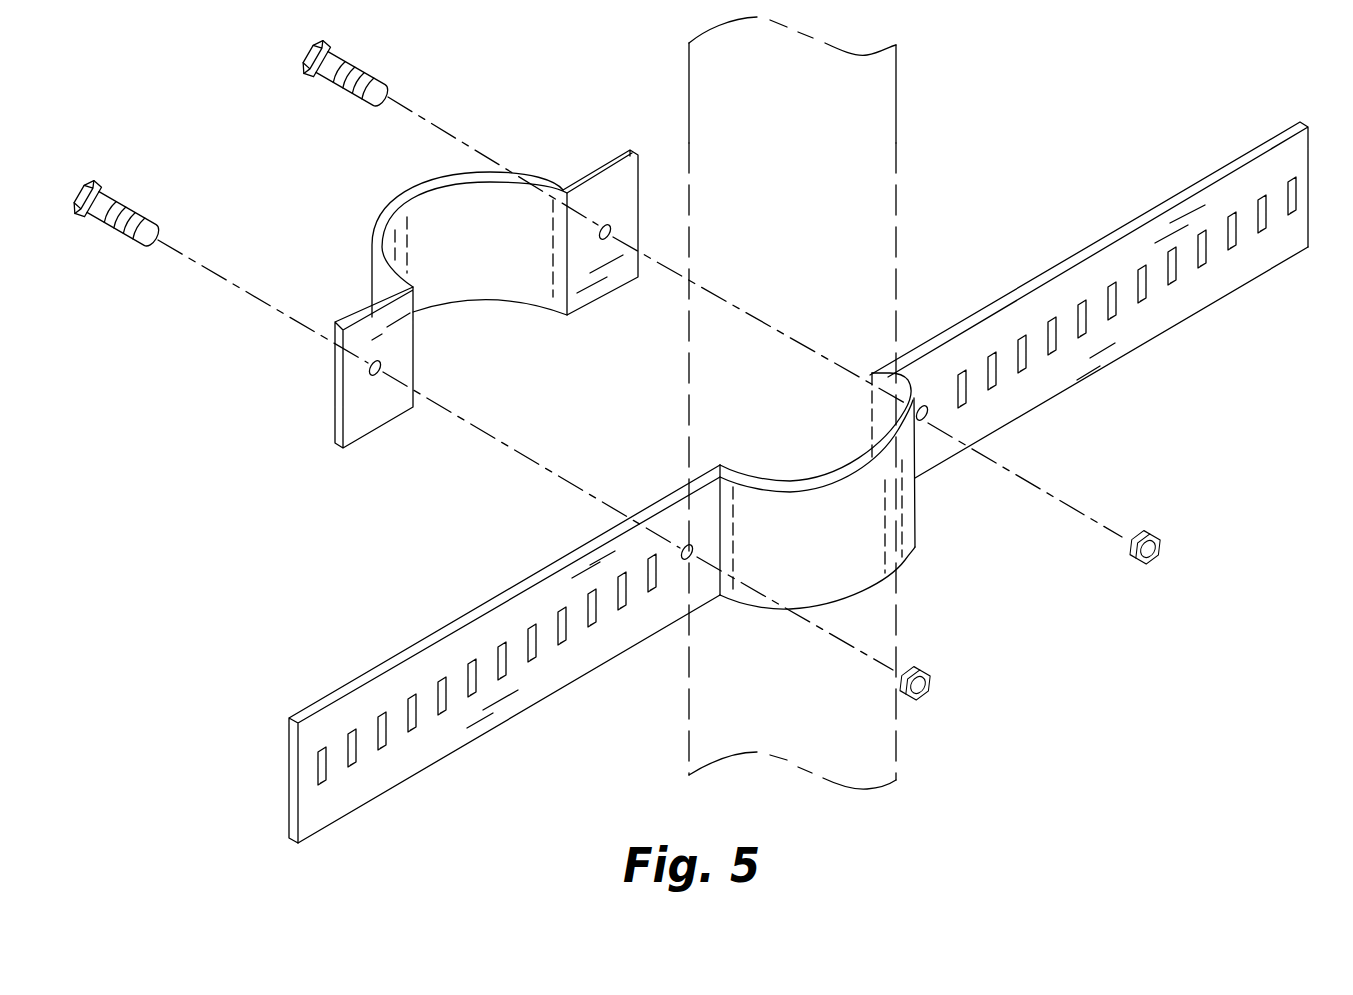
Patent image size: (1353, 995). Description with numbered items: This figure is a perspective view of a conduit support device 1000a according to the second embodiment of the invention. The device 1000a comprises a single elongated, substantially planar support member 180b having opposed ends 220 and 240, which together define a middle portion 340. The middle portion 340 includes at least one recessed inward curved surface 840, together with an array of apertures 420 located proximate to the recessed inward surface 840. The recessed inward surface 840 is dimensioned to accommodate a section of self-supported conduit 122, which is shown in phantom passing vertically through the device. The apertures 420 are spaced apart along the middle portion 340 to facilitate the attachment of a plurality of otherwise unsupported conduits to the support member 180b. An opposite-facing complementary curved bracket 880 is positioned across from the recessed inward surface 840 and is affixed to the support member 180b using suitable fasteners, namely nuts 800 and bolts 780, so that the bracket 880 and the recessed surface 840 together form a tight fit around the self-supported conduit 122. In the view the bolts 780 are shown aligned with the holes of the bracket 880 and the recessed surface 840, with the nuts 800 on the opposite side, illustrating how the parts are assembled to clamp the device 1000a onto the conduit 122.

The self-supported conduit 122 is at (897, 90).
The elongated substantially planar support member 180b is at (1108, 272).
The opposed end 220 is at (313, 813).
The opposed end 240 is at (1263, 255).
The middle portion 340 is at (645, 617).
The array of apertures 420 is at (527, 660).
The bolts 780 is at (115, 193).
The nuts 800 is at (1125, 552).
The recessed inward curved surface 840 is at (848, 470).
The complementary curved bracket 880 is at (483, 297).
The conduit support device 1000a is at (212, 592).